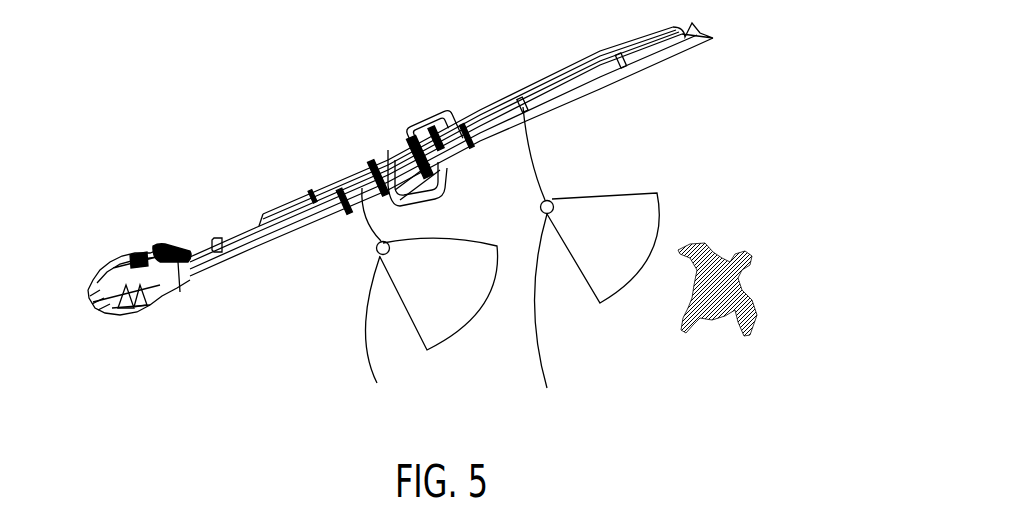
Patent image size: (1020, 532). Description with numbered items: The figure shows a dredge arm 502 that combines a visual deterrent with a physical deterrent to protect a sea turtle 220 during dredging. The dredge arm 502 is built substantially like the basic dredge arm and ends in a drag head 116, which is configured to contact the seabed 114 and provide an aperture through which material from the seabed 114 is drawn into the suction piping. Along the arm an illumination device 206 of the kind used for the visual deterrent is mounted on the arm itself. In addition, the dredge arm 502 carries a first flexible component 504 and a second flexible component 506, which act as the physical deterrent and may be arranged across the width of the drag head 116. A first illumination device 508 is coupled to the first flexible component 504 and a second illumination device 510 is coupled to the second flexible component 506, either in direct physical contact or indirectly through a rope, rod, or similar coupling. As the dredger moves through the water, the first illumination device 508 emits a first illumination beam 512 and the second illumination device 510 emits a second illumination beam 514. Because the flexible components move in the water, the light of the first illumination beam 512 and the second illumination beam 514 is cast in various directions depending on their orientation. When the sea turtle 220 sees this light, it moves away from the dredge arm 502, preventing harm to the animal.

The dredge arm 502 is at (340, 69).
The second illumination device 206 is at (500, 103).
The drag head 116 is at (97, 288).
The seabed 114 is at (110, 300).
The first illumination device 508 is at (377, 245).
The first flexible component 504 is at (370, 358).
The first illumination beam 512 is at (443, 325).
The second illumination device 510 is at (550, 200).
The second flexible component 506 is at (538, 353).
The second illumination beam 514 is at (620, 203).
The sea turtle 220 is at (728, 282).